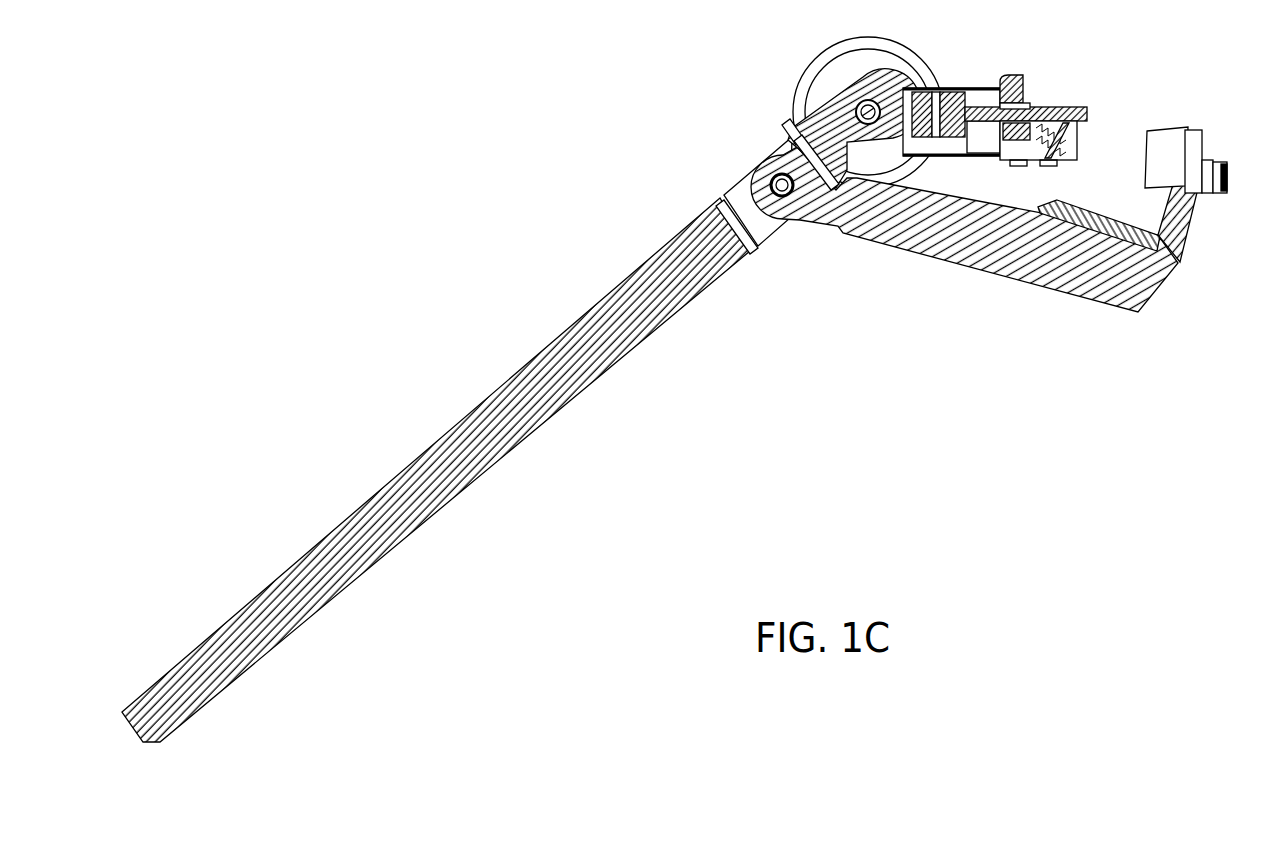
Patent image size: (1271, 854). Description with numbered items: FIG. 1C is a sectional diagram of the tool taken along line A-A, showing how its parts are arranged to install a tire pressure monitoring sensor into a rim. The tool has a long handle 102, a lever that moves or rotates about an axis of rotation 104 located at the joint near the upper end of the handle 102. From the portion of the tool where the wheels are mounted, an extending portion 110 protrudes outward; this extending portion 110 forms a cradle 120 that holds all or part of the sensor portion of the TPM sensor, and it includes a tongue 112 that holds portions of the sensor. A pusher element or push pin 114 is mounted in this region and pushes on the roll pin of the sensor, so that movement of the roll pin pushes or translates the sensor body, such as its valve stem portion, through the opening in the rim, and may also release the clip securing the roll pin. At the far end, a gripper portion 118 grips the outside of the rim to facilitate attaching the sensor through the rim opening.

The handle 102 is at (350, 516).
The axis of rotation 104 is at (767, 170).
The extending portion 110 is at (995, 316).
The tongue 112 is at (1043, 75).
The push pin 114 is at (968, 158).
The gripper portion 118 is at (1196, 233).
The cradle 120 is at (1054, 82).